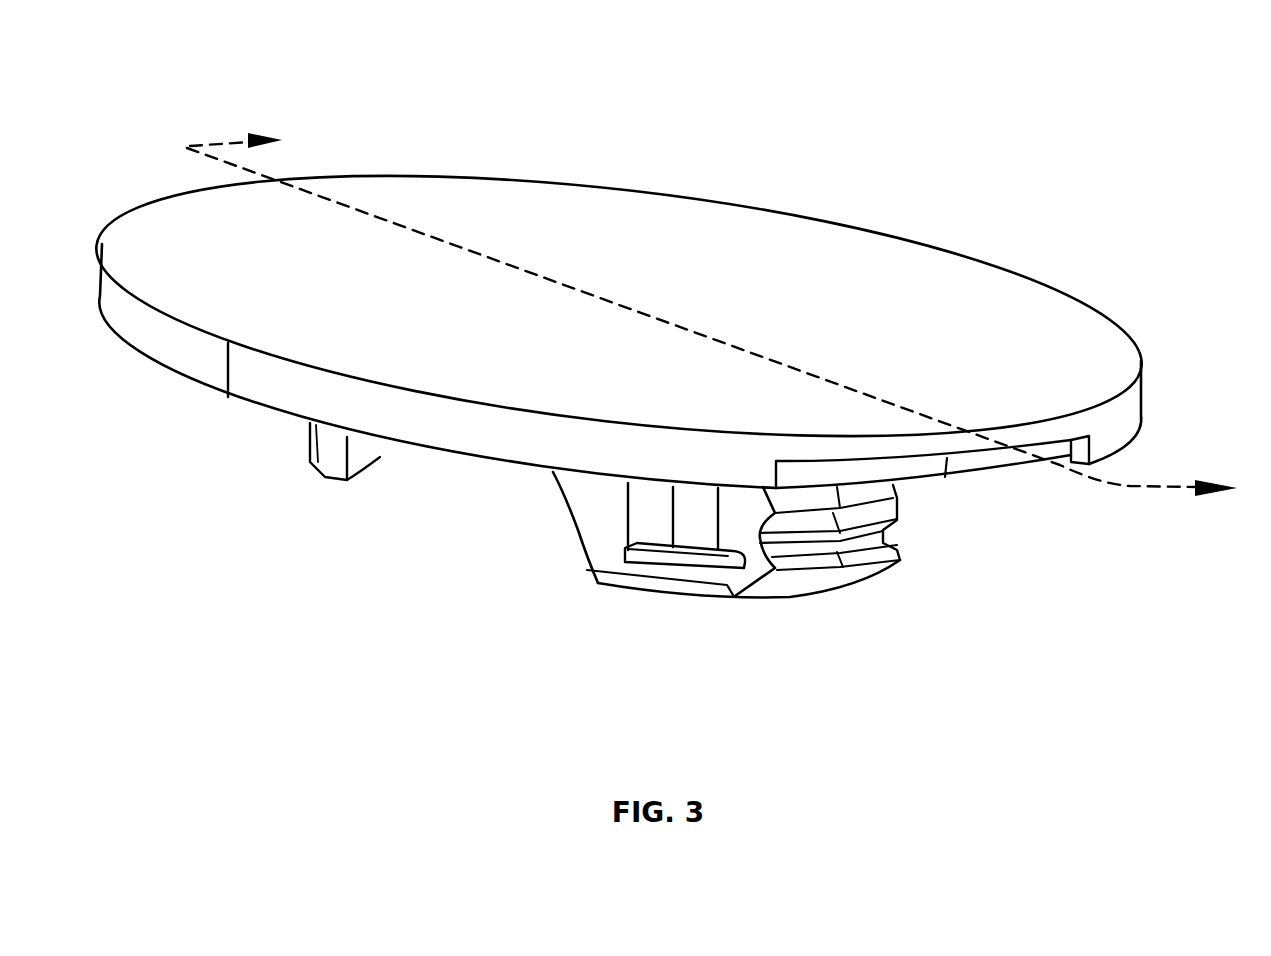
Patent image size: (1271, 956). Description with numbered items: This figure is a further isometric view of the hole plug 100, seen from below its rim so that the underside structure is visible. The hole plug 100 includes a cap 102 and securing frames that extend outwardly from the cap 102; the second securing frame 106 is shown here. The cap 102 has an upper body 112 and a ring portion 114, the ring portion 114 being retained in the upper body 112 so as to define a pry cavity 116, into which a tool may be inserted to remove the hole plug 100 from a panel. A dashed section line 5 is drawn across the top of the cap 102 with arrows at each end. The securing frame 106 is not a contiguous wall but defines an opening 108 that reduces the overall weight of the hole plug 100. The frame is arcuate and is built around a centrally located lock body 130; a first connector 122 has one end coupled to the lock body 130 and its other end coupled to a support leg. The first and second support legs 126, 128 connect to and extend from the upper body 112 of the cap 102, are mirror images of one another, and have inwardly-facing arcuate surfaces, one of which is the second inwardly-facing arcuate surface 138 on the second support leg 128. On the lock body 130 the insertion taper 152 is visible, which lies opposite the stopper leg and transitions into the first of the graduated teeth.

The hole plug 100 is at (165, 81).
The section line 5- 5 is at (698, 334).
The cap 102 is at (528, 238).
The second securing frame 106 is at (585, 565).
The opening 108 is at (702, 537).
The upper body 112 is at (1132, 404).
The ring portion 114 is at (910, 472).
The pry cavity 116 is at (997, 469).
The first connector 122 is at (655, 575).
The first support leg 126 is at (578, 485).
The second support leg 128 is at (310, 437).
The lock body 130 is at (763, 513).
The second inwardly-facing arcuate surface 138 is at (335, 458).
The insertion taper 152 is at (803, 582).